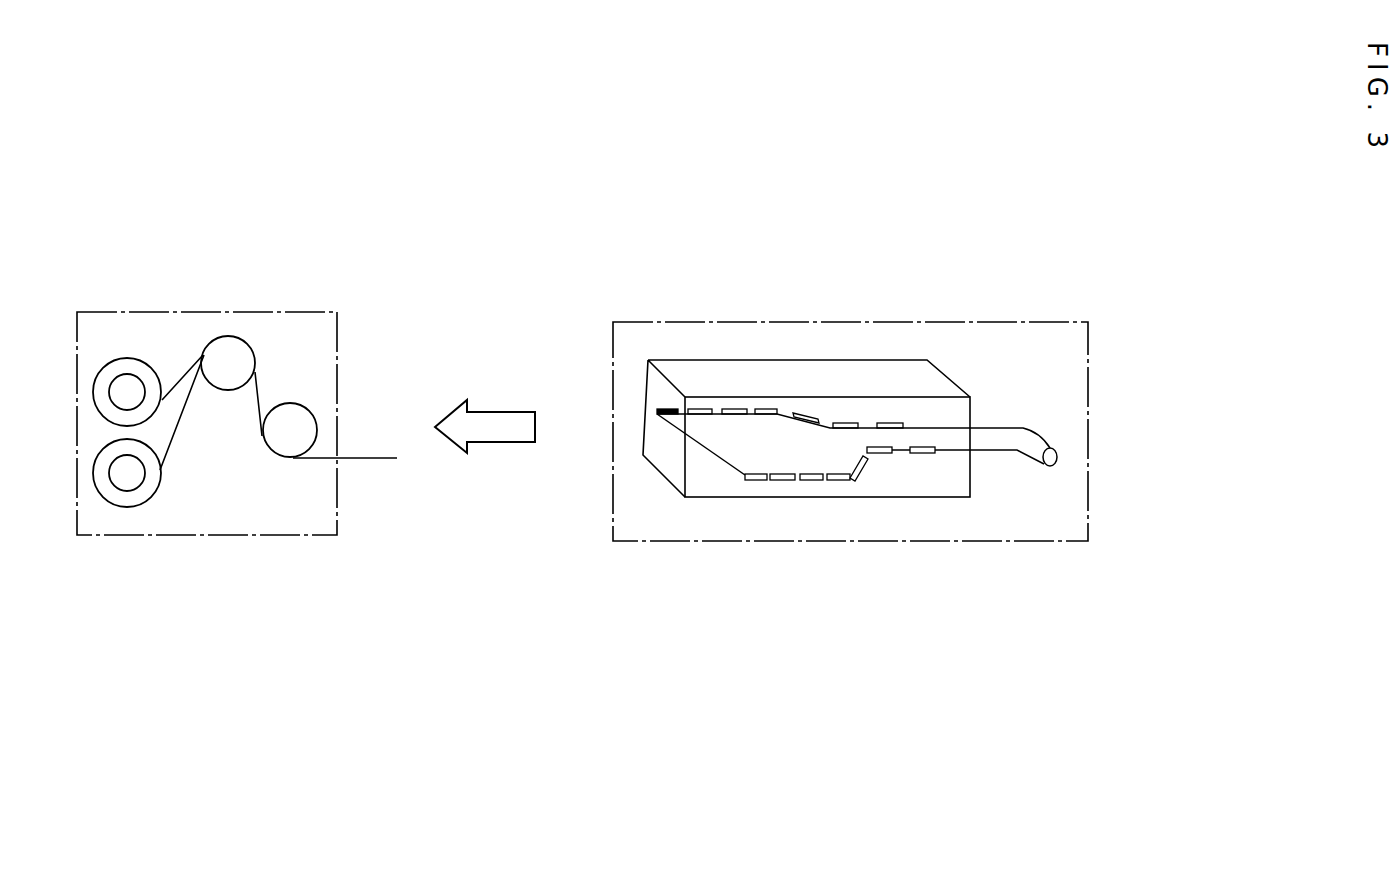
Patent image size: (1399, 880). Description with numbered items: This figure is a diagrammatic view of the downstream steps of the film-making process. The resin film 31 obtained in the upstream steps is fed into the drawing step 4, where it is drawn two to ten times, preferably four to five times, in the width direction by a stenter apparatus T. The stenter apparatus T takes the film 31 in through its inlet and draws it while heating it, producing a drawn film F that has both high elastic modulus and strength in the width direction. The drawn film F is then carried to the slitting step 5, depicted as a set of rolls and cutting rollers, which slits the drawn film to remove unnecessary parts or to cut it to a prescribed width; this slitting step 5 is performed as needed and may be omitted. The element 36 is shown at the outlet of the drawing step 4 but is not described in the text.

The drawing step 4 is at (882, 322).
The slitting step 5 is at (338, 415).
The resin film 31 is at (1027, 435).
The roll 36 is at (1056, 460).
The drawn film F is at (732, 452).
The stenter apparatus T is at (873, 500).